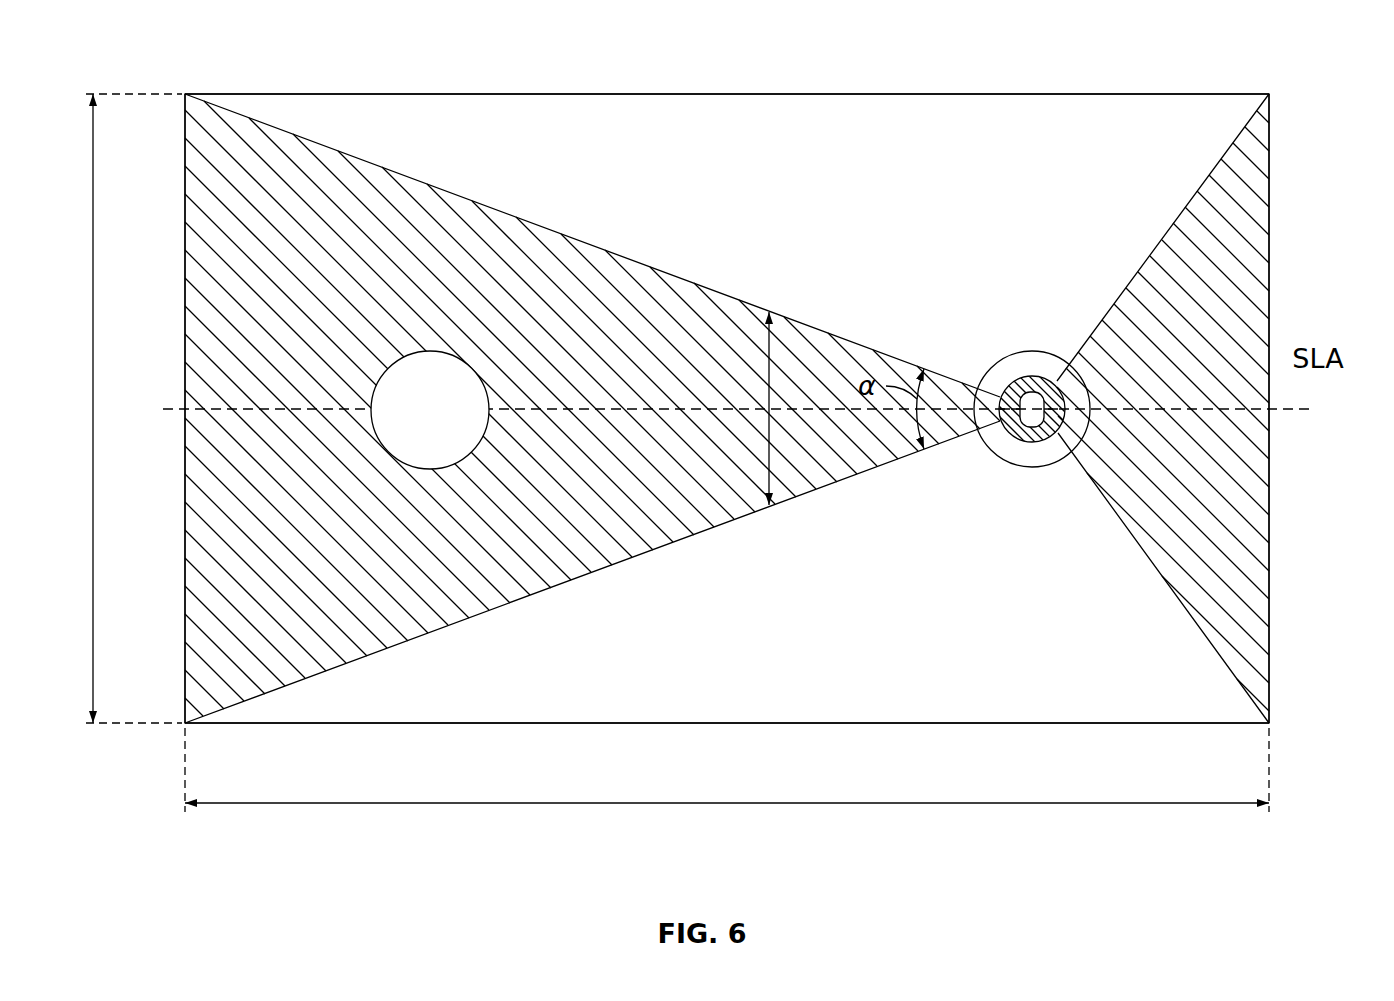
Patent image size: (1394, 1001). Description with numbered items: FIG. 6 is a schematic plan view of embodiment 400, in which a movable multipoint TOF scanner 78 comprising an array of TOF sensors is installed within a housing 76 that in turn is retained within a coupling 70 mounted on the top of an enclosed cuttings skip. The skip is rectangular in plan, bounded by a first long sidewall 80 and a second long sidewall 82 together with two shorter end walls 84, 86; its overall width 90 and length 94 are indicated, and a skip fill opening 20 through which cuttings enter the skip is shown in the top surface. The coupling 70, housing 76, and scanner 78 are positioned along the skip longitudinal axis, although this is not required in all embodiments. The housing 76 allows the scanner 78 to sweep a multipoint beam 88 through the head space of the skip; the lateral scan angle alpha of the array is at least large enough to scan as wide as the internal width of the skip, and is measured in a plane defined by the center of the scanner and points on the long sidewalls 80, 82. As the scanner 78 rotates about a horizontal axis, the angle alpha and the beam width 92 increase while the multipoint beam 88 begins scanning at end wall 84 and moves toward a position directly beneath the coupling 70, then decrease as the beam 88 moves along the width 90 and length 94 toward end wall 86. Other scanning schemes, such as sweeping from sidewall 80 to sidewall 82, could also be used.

The skip fill opening 20 is at (396, 460).
The coupling 70 is at (1019, 353).
The housing 76 is at (1021, 443).
The movable multipoint TOF scanner 78 is at (1034, 395).
The first long sidewall 80 is at (1008, 94).
The second long sidewall 82 is at (997, 723).
The end wall 84 is at (1269, 183).
The end wall 86 is at (185, 183).
The multipoint beam 88 is at (590, 242).
The width 90 is at (93, 565).
The beam width 92 is at (769, 388).
The length 94 is at (770, 803).
The embodiment 400 is at (1297, 55).